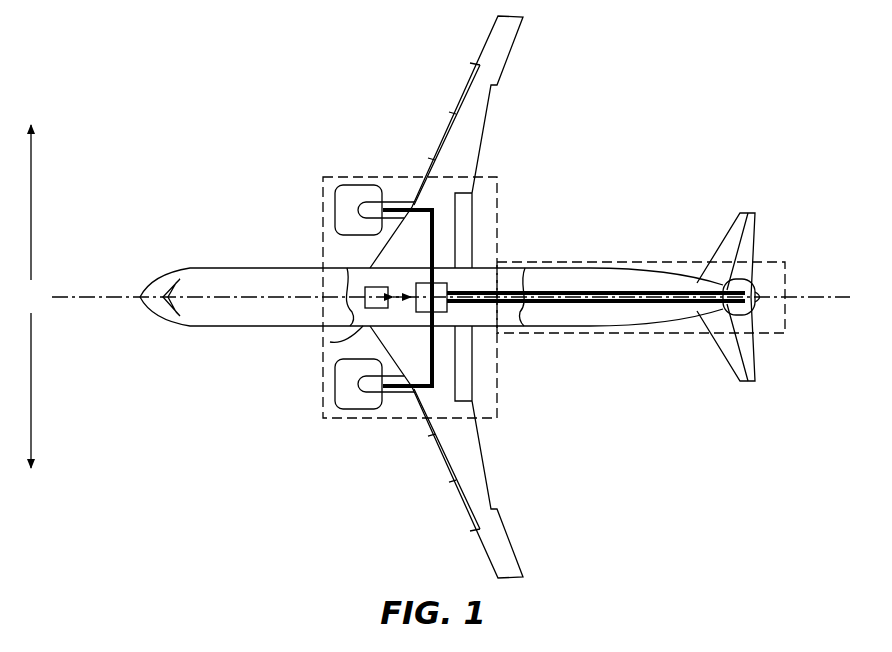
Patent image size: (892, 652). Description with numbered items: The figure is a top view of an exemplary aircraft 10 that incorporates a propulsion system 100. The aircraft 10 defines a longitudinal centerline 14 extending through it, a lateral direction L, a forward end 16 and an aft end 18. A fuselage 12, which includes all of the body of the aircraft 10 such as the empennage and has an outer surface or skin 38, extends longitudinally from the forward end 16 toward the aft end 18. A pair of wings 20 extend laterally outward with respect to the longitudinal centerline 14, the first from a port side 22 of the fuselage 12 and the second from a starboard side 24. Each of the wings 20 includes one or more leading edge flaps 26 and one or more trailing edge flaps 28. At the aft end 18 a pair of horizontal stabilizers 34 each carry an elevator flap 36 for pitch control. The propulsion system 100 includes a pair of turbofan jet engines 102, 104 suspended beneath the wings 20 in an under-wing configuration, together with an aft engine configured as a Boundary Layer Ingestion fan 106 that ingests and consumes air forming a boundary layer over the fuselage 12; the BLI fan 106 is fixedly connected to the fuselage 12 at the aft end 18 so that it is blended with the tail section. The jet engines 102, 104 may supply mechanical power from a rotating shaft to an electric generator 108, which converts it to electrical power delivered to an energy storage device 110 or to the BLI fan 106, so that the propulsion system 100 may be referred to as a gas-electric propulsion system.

The aircraft 10 is at (628, 102).
The fuselage 12 is at (190, 323).
The longitudinal centerline 14 is at (73, 297).
The forward end 16 is at (139, 313).
The aft end 18 is at (714, 380).
The wings 20 is at (507, 37).
The port side 22 is at (268, 339).
The starboard side 24 is at (262, 266).
The leading edge flaps 26 is at (440, 462).
The trailing edge flaps 28 is at (492, 463).
The horizontal stabilizers 34 is at (733, 232).
The elevator flap 36 is at (757, 214).
The outer surface or skin 38 is at (585, 316).
The propulsion system 100 is at (550, 257).
The turbofan jet engine 102 is at (350, 414).
The turbofan jet engine 104 is at (350, 183).
The Boundary Layer Ingestion (BLI) fan 106 is at (757, 263).
The electric generator 108 is at (447, 285).
The energy storage device 110 is at (370, 309).
The lateral direction L is at (31, 296).